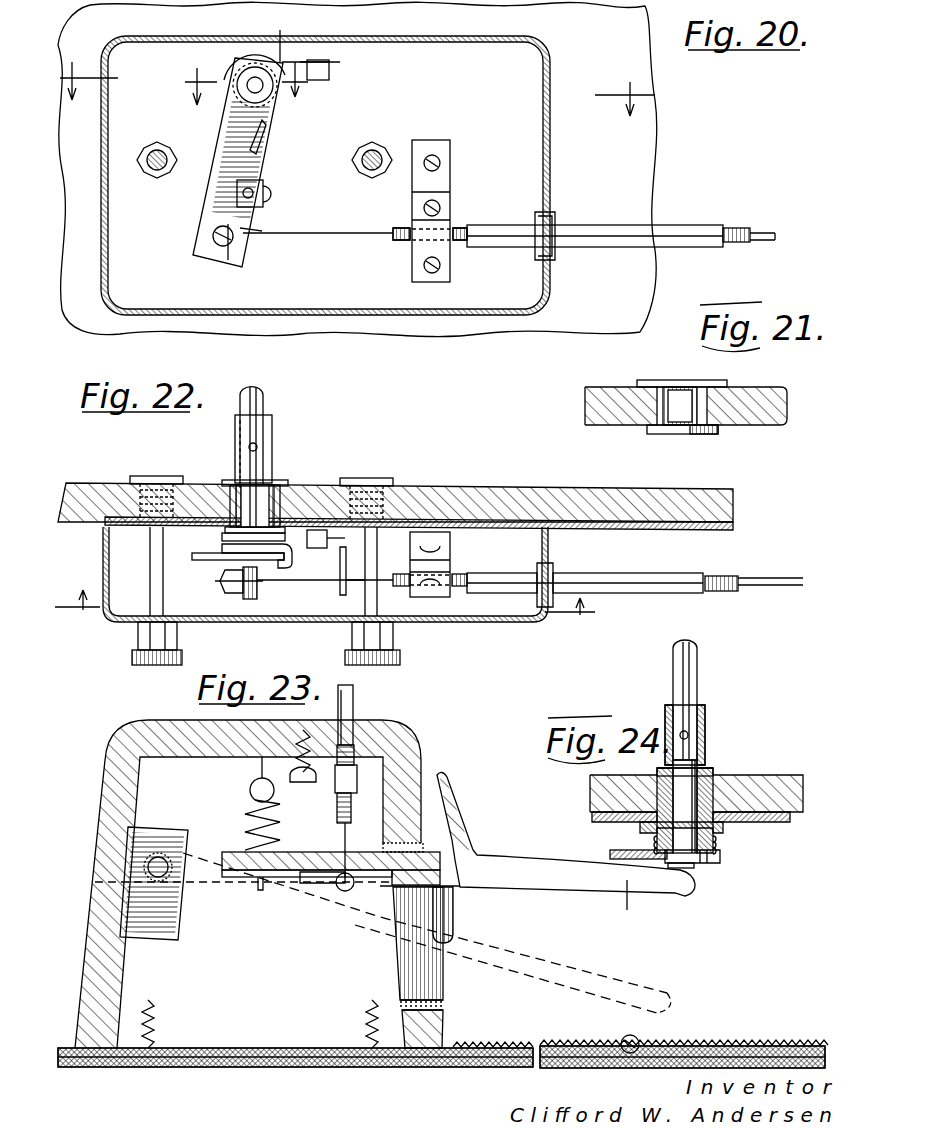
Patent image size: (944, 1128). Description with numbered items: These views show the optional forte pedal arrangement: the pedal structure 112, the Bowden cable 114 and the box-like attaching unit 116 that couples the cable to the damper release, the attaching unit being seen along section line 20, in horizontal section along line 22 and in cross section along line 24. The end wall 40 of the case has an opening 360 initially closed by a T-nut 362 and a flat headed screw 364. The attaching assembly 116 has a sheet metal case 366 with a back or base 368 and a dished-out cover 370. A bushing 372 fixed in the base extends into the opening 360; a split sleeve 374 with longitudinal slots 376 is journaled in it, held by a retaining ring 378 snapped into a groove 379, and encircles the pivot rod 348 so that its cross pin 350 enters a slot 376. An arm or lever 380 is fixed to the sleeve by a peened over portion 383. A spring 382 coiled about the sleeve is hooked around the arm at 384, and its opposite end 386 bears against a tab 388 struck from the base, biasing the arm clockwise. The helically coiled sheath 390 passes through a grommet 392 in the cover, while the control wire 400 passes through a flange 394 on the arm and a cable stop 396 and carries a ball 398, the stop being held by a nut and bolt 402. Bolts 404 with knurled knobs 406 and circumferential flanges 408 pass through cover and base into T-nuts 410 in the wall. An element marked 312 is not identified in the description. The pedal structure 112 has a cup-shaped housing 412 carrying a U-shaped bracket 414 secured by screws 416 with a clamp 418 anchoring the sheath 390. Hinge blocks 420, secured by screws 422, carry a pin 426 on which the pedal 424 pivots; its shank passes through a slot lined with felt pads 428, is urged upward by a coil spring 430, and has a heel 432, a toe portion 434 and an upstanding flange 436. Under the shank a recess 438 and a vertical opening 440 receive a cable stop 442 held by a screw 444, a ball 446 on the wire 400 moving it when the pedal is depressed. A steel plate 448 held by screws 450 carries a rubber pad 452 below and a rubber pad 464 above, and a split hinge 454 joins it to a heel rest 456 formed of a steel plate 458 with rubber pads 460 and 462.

In FIG. 22, the section line 20— 20 is at (325, 621).
In FIG. 20, the section line 22— 22 is at (356, 77).
In FIG. 20, the section line 24— 24 is at (246, 73).
In FIG. 20, the end wall 40 is at (630, 154).
In FIG. 21, the end wall 40 is at (757, 403).
In FIG. 22, the end wall 40 is at (506, 498).
In FIG. 24, the end wall 40 is at (772, 790).
In FIG. 23, the foot pedal structure 112 is at (425, 733).
In FIG. 20, the Bowden cable 114 is at (690, 216).
In FIG. 22, the Bowden cable 114 is at (653, 608).
In FIG. 23, the Bowden cable 114 is at (373, 712).
In FIG. 20, the attaching unit 116 is at (477, 330).
In FIG. 22, the table assembly 312 is at (577, 477).
In FIG. 22, the pivot rod 348 is at (262, 392).
In FIG. 24, the pivot rod 348 is at (690, 648).
In FIG. 22, the cross pin 350 is at (258, 445).
In FIG. 24, the cross pin 350 is at (692, 730).
In FIG. 21, the opening 360 is at (705, 407).
In FIG. 22, the opening 360 is at (283, 497).
In FIG. 24, the opening 360 is at (714, 792).
In FIG. 21, the T-nut 362 is at (658, 383).
In FIG. 21, the flat headed screw 364 is at (688, 432).
In FIG. 20, the sheet metal case 366 is at (568, 185).
In FIG. 22, the sheet metal case 366 is at (512, 636).
In FIG. 20, the back or base 368 is at (512, 148).
In FIG. 22, the back or base 368 is at (478, 520).
In FIG. 24, the back or base 368 is at (782, 815).
In FIG. 20, the dished-out cover 370 is at (548, 289).
In FIG. 22, the dished-out cover 370 is at (550, 538).
In FIG. 20, the bushing 372 is at (290, 96).
In FIG. 22, the bushing 372 is at (230, 505).
In FIG. 24, the bushing 372 is at (724, 828).
In FIG. 22, the split sleeve 374 is at (272, 470).
In FIG. 24, the split sleeve 374 is at (712, 760).
In FIG. 22, the longitudinal slots 376 is at (268, 420).
In FIG. 24, the longitudinal slots 376 is at (700, 690).
In FIG. 22, the retaining ring 378 is at (235, 497).
In FIG. 24, the retaining ring 378 is at (717, 770).
In FIG. 24, the groove 379 is at (598, 791).
In FIG. 20, the arm or lever 380 is at (262, 163).
In FIG. 22, the arm or lever 380 is at (195, 560).
In FIG. 24, the arm or lever 380 is at (620, 852).
In FIG. 22, the spring 382 is at (224, 547).
In FIG. 24, the spring 382 is at (716, 841).
In FIG. 24, the peened over portion 383 is at (690, 868).
In FIG. 20, the hooked spring end 384 is at (266, 137).
In FIG. 22, the hooked spring end 384 is at (286, 568).
In FIG. 24, the hooked spring end 384 is at (722, 858).
In FIG. 20, the opposite spring end 386 is at (330, 68).
In FIG. 22, the opposite spring end 386 is at (345, 550).
In FIG. 20, the tab 388 is at (280, 45).
In FIG. 22, the tab 388 is at (341, 594).
In FIG. 20, the helically coiled sheath 390 is at (748, 230).
In FIG. 22, the helically coiled sheath 390 is at (735, 575).
In FIG. 23, the helically coiled sheath 390 is at (356, 770).
In FIG. 20, the grommet 392 is at (440, 205).
In FIG. 22, the grommet 392 is at (440, 562).
In FIG. 20, the flange 394 is at (250, 228).
In FIG. 20, the cable stop 396 is at (226, 225).
In FIG. 20, the sphere or ball 398 is at (200, 258).
In FIG. 20, the control wire 400 is at (356, 236).
In FIG. 22, the control wire 400 is at (282, 592).
In FIG. 23, the control wire 400 is at (340, 848).
In FIG. 20, the nut and bolt 402 is at (263, 192).
In FIG. 22, the nut and bolt 402 is at (233, 596).
In FIG. 20, the bolts 404 is at (157, 178).
In FIG. 22, the bolts 404 is at (125, 549).
In FIG. 22, the knurled knobs 406 is at (132, 658).
In FIG. 22, the circumferential flanges 408 is at (138, 625).
In FIG. 20, the T-nuts 410 is at (157, 142).
In FIG. 22, the T-nuts 410 is at (152, 476).
In FIG. 23, the housing 412 is at (120, 768).
In FIG. 23, the U-shaped bracket 414 is at (258, 767).
In FIG. 23, the screws 416 is at (307, 774).
In FIG. 23, the clamp 418 is at (380, 772).
In FIG. 23, the pedal hinge blocks 420 is at (175, 836).
In FIG. 23, the screws 422 is at (100, 890).
In FIG. 23, the pedal 424 is at (405, 890).
In FIG. 23, the pin 426 is at (135, 858).
In FIG. 23, the felt pads 428 is at (414, 823).
In FIG. 23, the coil spring 430 is at (325, 801).
In FIG. 23, the heel 432 is at (452, 935).
In FIG. 23, the toe portion 434 is at (566, 853).
In FIG. 23, the upstanding flange 436 is at (445, 790).
In FIG. 23, the recess 438 is at (240, 880).
In FIG. 23, the vertical opening 440 is at (352, 852).
In FIG. 23, the cable stop 442 is at (333, 883).
In FIG. 23, the screw 444 is at (300, 880).
In FIG. 23, the sphere or ball 446 is at (340, 892).
In FIG. 23, the steel plate 448 is at (270, 1048).
In FIG. 23, the screws 450 is at (156, 1020).
In FIG. 23, the rubber pad 452 is at (258, 1068).
In FIG. 23, the split hinge 454 is at (640, 1042).
In FIG. 23, the heel rest 456 is at (804, 1033).
In FIG. 23, the steel plate 458 is at (762, 1046).
In FIG. 23, the rubber pad 460 is at (748, 1046).
In FIG. 23, the rubber pad 462 is at (562, 1070).
In FIG. 23, the rubber pad 464 is at (560, 1046).